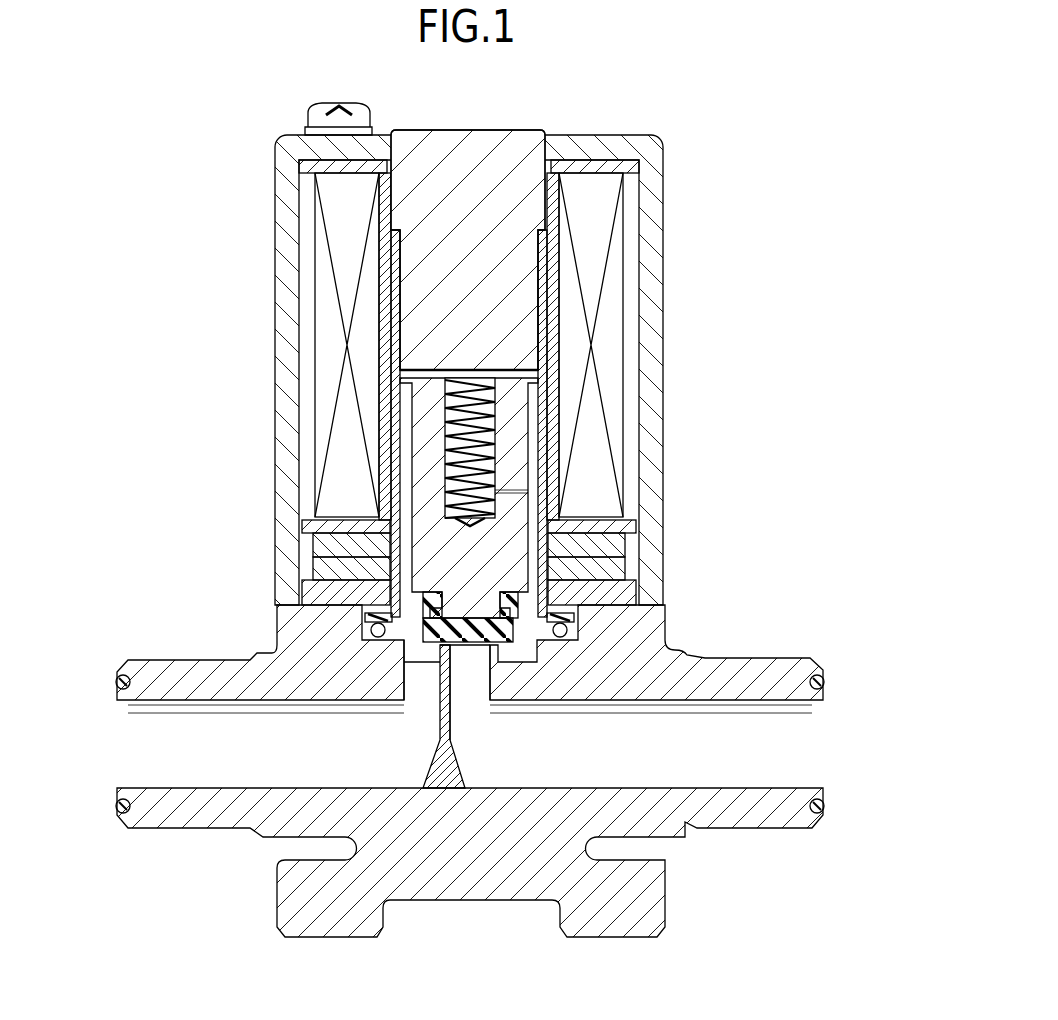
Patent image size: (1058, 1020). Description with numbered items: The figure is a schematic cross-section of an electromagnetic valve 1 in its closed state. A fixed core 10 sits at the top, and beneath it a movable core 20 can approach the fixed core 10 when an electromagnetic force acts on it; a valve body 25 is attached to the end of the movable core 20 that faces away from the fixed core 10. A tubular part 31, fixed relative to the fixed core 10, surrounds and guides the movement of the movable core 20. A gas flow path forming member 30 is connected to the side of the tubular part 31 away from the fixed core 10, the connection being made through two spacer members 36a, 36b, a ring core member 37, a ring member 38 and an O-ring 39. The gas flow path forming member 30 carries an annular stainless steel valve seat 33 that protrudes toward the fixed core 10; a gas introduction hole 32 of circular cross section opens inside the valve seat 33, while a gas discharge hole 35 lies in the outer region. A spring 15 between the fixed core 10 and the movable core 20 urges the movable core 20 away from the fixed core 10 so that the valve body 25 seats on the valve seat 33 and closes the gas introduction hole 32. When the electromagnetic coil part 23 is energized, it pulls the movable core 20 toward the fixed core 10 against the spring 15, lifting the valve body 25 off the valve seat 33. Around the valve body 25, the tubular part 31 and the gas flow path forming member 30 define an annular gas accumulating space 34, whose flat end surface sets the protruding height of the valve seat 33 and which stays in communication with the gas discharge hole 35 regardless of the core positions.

The electromagnetic valve 1 is at (700, 121).
The fixed core 10 is at (512, 135).
The spring 15 is at (448, 490).
The movable core 20 is at (510, 428).
The electromagnetic coil part 23 is at (613, 283).
The valve body 25 is at (473, 627).
The gas flow path forming member 30 is at (822, 627).
The tubular part 31 is at (398, 236).
The gas introduction hole 32 is at (470, 668).
The valve seat 33 is at (496, 648).
The gas accumulating space 34 is at (412, 650).
The gas discharge hole 35 is at (422, 683).
The spacer member 36a is at (615, 543).
The spacer member 36b is at (615, 567).
The ring core member 37 is at (317, 595).
The ring member 38 is at (590, 590).
The O-ring 39 is at (578, 625).